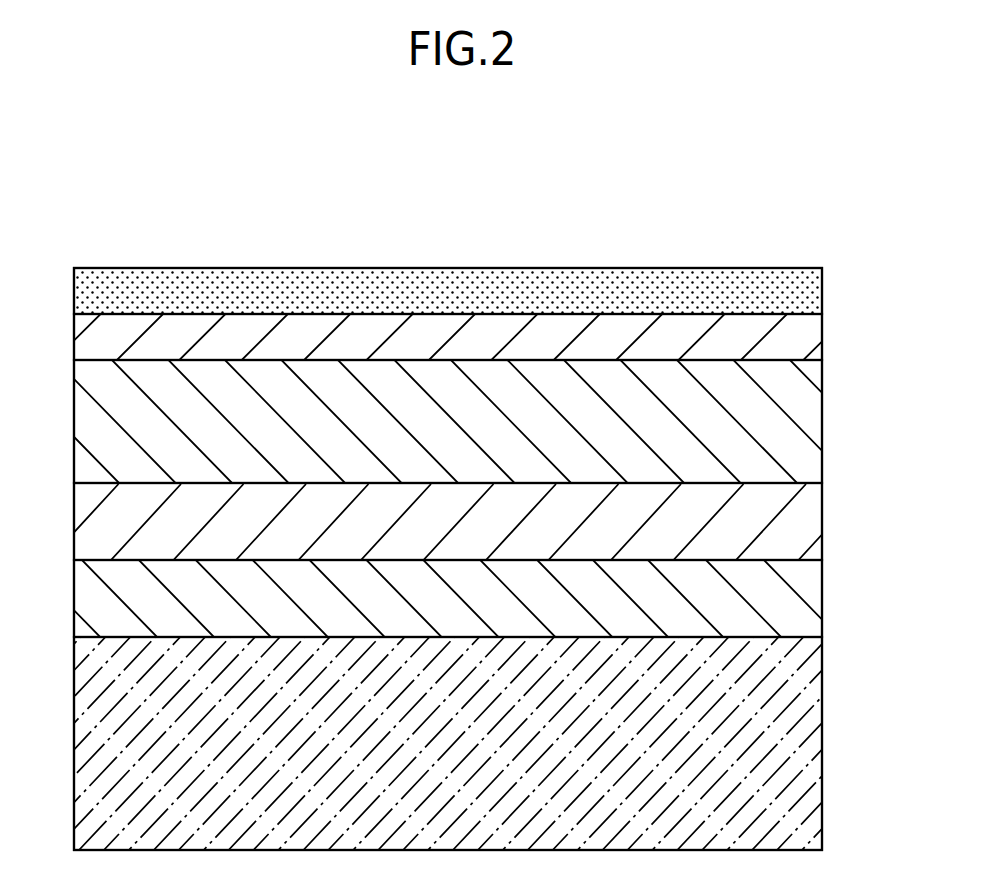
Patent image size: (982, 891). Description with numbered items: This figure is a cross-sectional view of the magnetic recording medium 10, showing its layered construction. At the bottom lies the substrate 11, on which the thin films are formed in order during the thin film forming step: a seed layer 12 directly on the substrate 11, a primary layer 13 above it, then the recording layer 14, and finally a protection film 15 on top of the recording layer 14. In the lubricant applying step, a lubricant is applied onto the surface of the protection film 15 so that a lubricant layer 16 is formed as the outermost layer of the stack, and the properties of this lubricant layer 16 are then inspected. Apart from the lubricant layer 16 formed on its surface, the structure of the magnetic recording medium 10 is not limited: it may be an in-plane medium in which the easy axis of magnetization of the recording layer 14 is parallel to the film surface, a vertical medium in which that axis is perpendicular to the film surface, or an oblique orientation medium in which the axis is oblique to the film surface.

The magnetic recording medium 10 is at (73, 178).
The substrate 11 is at (822, 735).
The seed layer 12 is at (822, 588).
The primary layer 13 is at (822, 518).
The recording layer 14 is at (822, 421).
The protection film 15 is at (822, 330).
The lubricant layer 16 is at (822, 295).